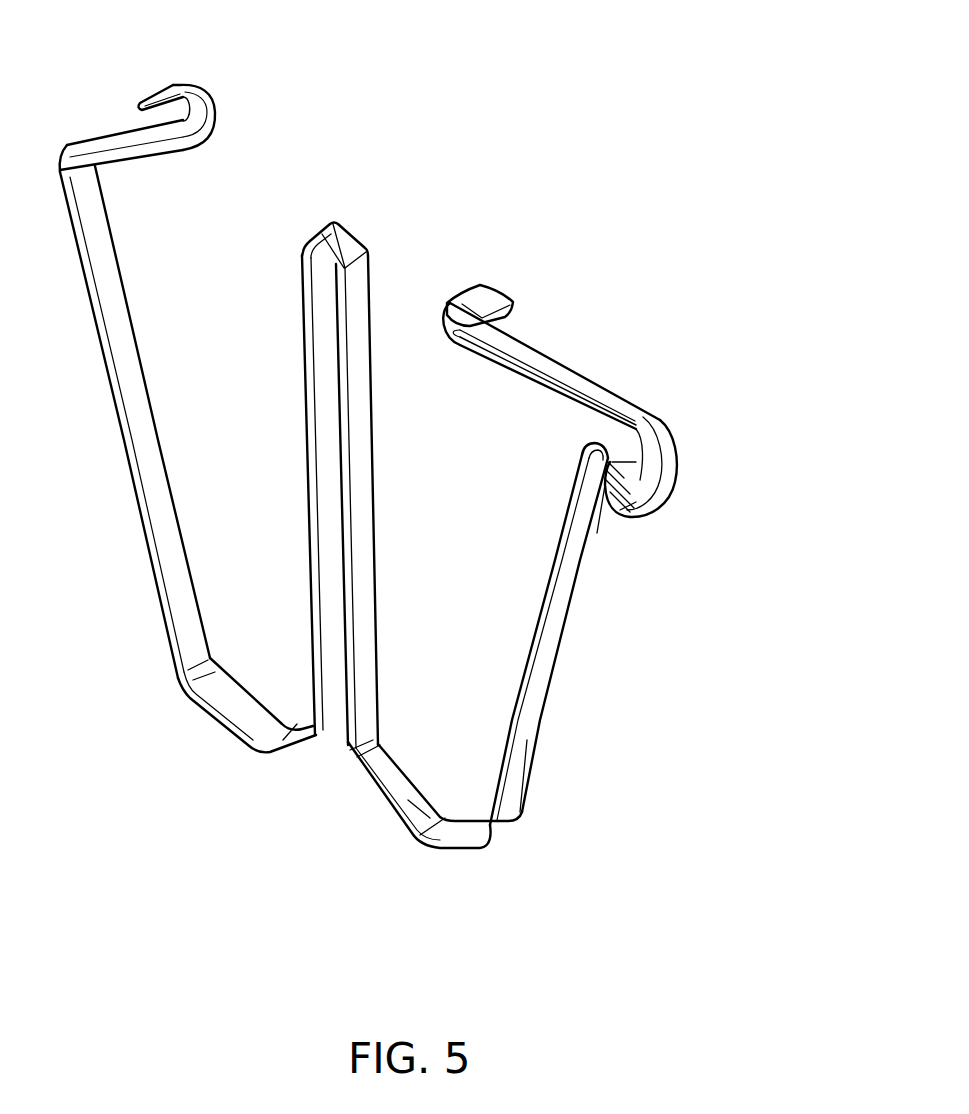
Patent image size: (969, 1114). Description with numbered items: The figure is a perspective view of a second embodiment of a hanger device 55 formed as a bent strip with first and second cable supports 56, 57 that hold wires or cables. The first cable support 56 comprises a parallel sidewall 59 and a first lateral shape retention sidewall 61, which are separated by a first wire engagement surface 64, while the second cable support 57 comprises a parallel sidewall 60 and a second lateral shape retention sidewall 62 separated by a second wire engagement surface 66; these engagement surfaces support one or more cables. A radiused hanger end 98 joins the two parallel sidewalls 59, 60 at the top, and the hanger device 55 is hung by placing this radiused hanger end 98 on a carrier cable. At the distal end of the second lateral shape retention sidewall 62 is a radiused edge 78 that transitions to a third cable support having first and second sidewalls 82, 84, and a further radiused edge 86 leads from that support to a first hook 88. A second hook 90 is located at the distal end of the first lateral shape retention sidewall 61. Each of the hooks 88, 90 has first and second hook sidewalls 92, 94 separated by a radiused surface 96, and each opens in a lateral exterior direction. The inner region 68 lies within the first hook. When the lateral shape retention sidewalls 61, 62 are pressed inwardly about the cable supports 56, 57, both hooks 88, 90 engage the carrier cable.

The hanger device 55 is at (690, 200).
The first cable support 56 is at (217, 750).
The second cable support 57 is at (388, 828).
The parallel sidewall 59 is at (303, 570).
The parallel sidewall 60 is at (370, 575).
The first lateral shape retention sidewall 61 is at (140, 413).
The second lateral shape retention sidewall 62 is at (547, 670).
The first wire engagement surface 64 is at (265, 730).
The second wire engagement surface 66 is at (433, 797).
The hook inner surface 68 is at (633, 545).
The radiused edge 78 is at (573, 425).
The first sidewall 82 is at (630, 523).
The second sidewall 84 is at (663, 490).
The radiused edge 86 is at (660, 455).
The first hook 88 is at (517, 313).
The second hook 90 is at (230, 97).
The first hook sidewall 92 is at (105, 140).
The second hook sidewall 94 is at (167, 100).
The radiused surface 96 is at (192, 102).
The radiused hanger end 98 is at (338, 243).